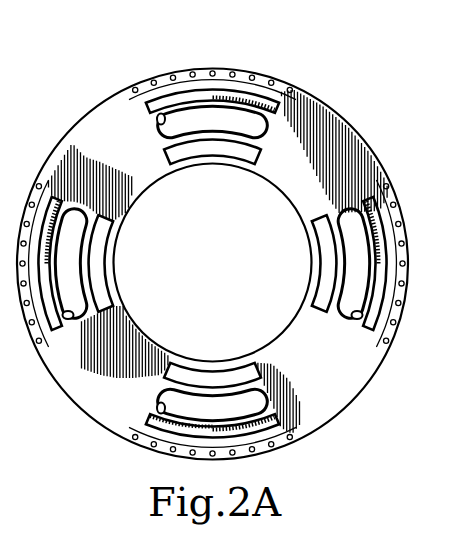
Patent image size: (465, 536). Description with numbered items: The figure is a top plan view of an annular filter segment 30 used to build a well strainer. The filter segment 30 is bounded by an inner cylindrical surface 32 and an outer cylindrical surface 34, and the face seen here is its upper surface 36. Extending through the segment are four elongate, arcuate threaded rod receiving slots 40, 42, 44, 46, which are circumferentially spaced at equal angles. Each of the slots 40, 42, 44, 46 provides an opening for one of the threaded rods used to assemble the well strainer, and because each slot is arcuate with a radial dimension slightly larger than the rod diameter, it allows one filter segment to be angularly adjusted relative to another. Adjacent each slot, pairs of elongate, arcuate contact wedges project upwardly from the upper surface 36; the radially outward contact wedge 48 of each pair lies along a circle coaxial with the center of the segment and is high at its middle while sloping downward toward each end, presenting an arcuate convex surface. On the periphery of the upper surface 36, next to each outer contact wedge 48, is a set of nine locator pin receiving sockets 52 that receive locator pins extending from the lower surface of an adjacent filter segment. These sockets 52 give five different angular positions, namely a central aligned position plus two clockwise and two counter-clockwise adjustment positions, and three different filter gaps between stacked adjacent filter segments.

The annular filter segment 30 is at (355, 80).
The inner cylindrical surface 32 is at (281, 188).
The outer cylindrical surface 34 is at (354, 128).
The upper surface 36 is at (338, 386).
The threaded rod receiving slot 40 is at (158, 120).
The threaded rod receiving slot 42 is at (348, 318).
The threaded rod receiving slot 44 is at (158, 403).
The threaded rod receiving slot 46 is at (70, 318).
The contact wedge 48 is at (129, 100).
The locator pin receiving socket 52 is at (172, 75).